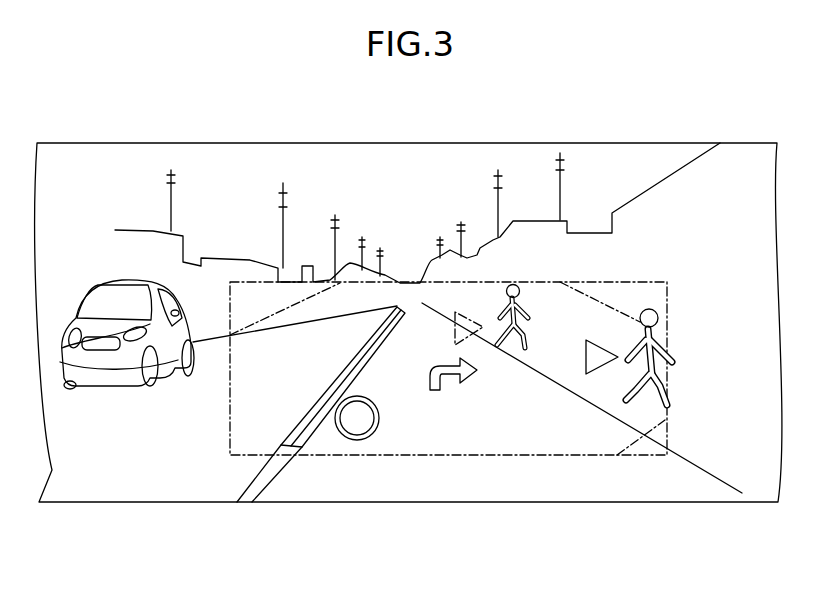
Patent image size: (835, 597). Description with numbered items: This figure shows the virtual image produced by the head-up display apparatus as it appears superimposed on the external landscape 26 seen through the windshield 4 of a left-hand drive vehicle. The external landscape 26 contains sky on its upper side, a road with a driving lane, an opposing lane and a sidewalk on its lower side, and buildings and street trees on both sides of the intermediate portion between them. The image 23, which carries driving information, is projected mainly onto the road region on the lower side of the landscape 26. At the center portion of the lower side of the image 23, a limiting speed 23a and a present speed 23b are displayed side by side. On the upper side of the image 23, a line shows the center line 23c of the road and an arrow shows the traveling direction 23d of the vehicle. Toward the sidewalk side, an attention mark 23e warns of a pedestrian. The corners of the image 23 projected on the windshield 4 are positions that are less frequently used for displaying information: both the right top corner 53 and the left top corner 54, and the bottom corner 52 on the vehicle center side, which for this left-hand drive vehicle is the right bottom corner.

The windshield 4 is at (570, 139).
The image 23 is at (495, 329).
The limiting speed 23a is at (357, 440).
The present speed 23b is at (405, 440).
The center line 23c is at (312, 440).
The traveling direction 23d is at (450, 362).
The attention mark 23e is at (483, 327).
The external landscape 26 is at (430, 235).
The corner (image) 52 is at (657, 465).
The corner (image) 53 is at (665, 265).
The corner (image) 54 is at (235, 270).